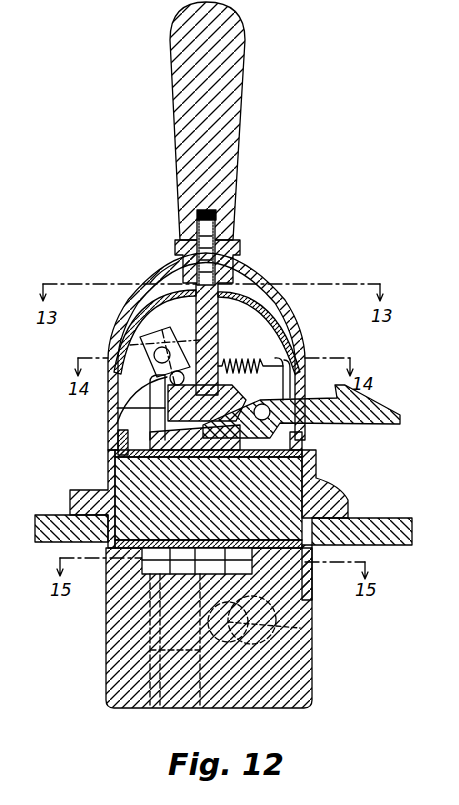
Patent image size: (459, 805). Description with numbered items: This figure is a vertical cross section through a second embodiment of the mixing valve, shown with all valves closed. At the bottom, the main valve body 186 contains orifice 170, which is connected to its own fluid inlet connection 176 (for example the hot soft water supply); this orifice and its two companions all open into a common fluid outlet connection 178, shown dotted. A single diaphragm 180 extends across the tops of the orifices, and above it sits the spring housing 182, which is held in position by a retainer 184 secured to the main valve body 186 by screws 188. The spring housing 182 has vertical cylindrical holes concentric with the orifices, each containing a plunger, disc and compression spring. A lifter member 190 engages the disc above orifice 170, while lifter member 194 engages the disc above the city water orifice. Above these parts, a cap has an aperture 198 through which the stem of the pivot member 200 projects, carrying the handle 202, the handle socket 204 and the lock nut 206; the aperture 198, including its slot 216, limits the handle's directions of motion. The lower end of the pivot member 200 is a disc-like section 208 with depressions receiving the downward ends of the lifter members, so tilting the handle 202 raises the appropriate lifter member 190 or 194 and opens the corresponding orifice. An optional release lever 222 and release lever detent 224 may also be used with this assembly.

The handle 202 is at (236, 88).
The pivot member 200 is at (198, 222).
The aperture 198 is at (232, 300).
The handle socket 204 is at (270, 282).
The slot 216 is at (162, 272).
The lock nut 206 is at (290, 300).
The lifter member 194 is at (238, 358).
The lifter member 190 is at (160, 406).
The disc-like section 208 is at (190, 420).
The screws 188 is at (120, 444).
The release lever detent 224 is at (104, 452).
The release lever 222 is at (368, 423).
The retainer 184 is at (305, 454).
The spring housing 182 is at (292, 482).
The diaphragm 180 is at (312, 550).
The main valve body 186 is at (346, 500).
The orifice 170 is at (150, 568).
The fluid inlet connection 176 is at (165, 700).
The fluid outlet connection 178 is at (300, 628).